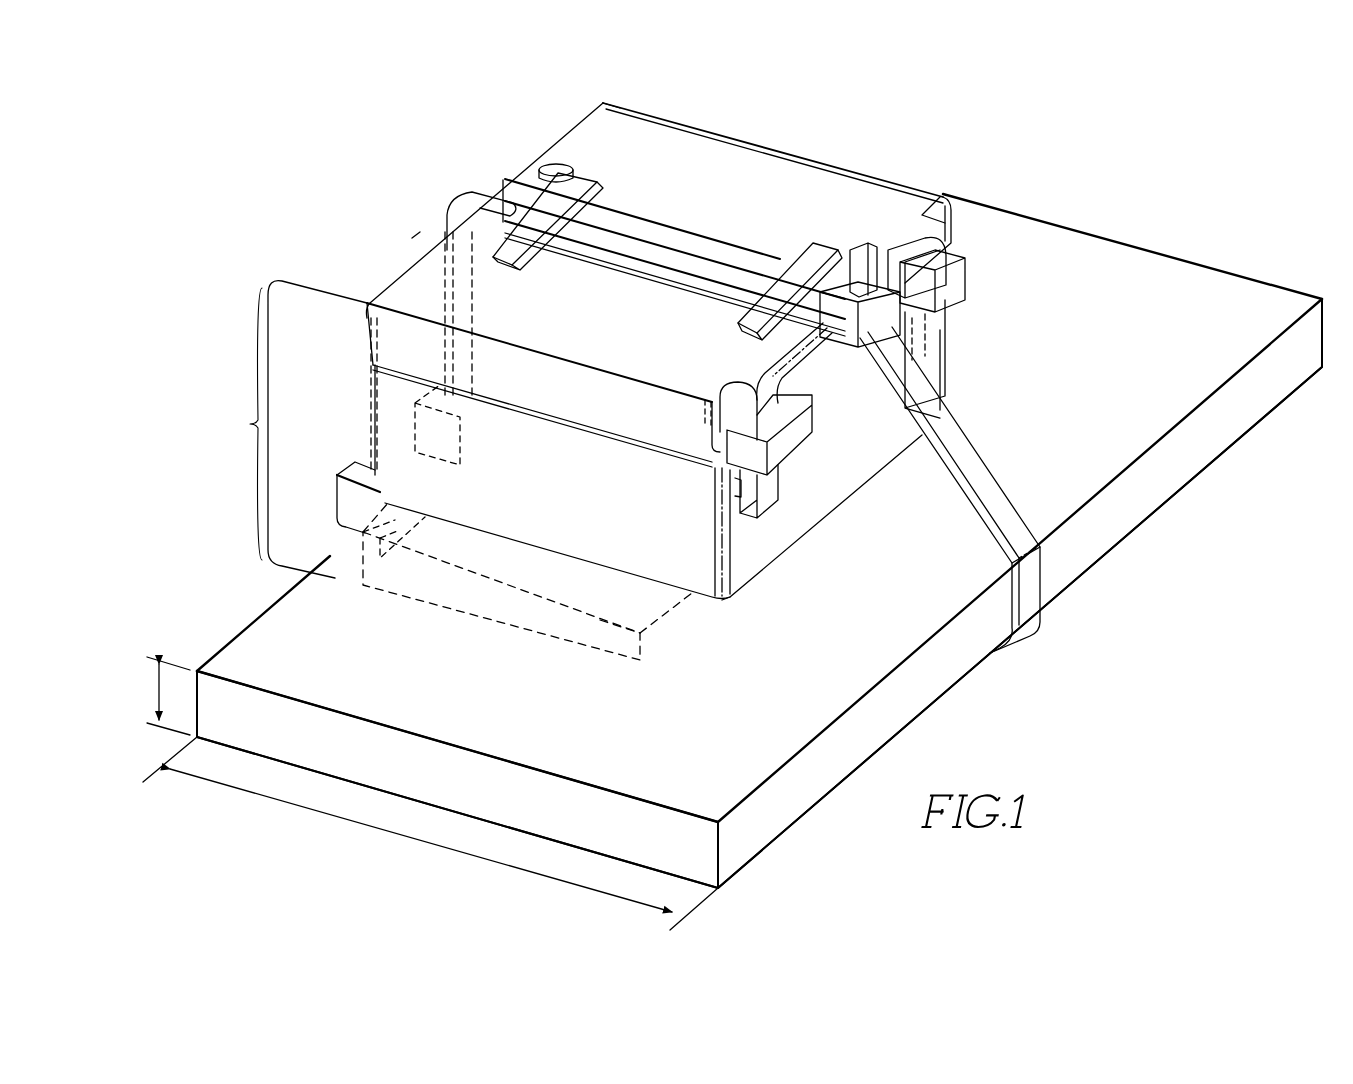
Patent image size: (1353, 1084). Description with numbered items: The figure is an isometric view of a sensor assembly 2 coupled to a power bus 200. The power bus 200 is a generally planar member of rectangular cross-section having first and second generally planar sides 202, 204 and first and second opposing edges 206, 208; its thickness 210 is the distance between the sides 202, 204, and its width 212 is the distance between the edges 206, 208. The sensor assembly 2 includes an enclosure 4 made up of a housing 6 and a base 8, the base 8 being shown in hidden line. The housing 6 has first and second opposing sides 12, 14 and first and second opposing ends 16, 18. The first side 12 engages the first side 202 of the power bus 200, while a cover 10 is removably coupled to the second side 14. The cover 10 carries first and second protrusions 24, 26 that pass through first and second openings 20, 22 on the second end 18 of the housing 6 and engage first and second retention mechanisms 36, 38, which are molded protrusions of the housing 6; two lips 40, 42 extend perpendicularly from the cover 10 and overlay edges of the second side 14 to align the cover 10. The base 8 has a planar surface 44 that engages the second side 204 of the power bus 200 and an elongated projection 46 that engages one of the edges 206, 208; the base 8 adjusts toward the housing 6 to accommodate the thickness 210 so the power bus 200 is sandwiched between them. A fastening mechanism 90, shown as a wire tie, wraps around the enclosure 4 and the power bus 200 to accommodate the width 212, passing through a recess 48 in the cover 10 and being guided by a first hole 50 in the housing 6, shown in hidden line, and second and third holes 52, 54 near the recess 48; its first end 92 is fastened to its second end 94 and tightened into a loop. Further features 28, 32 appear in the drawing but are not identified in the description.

The sensor assembly 2 is at (410, 236).
The enclosure 4 is at (248, 410).
The housing 6 is at (790, 528).
The base 8 is at (528, 620).
The cover 10 is at (688, 142).
The first side 12 is at (754, 602).
The second side 14 is at (358, 347).
The first end 16 is at (598, 100).
The second end 18 is at (945, 192).
The first opening 20 is at (778, 428).
The second opening 22 is at (955, 272).
The first protrusion 24 is at (774, 484).
The second protrusion 26 is at (946, 340).
The foot 28 is at (365, 470).
The side edge 32 is at (368, 388).
The first retention mechanism 36 is at (735, 490).
The second retention mechanism 38 is at (898, 346).
The lip 40 is at (704, 444).
The lip 42 is at (946, 238).
The planar surface 44 is at (598, 628).
The elongated projection 46 is at (398, 530).
The recess 48 is at (697, 244).
The first hole 50 is at (452, 385).
The second hole 52 is at (585, 208).
The third hole 54 is at (818, 290).
The fastening mechanism 90 is at (476, 390).
The first end 92 is at (876, 235).
The second end 94 is at (846, 352).
The power bus 200 is at (1116, 568).
The first side 202 is at (378, 703).
The second side 204 is at (485, 830).
The first edge 206 is at (195, 692).
The second edge 208 is at (752, 812).
The thickness 210 is at (158, 692).
The width 212 is at (386, 830).